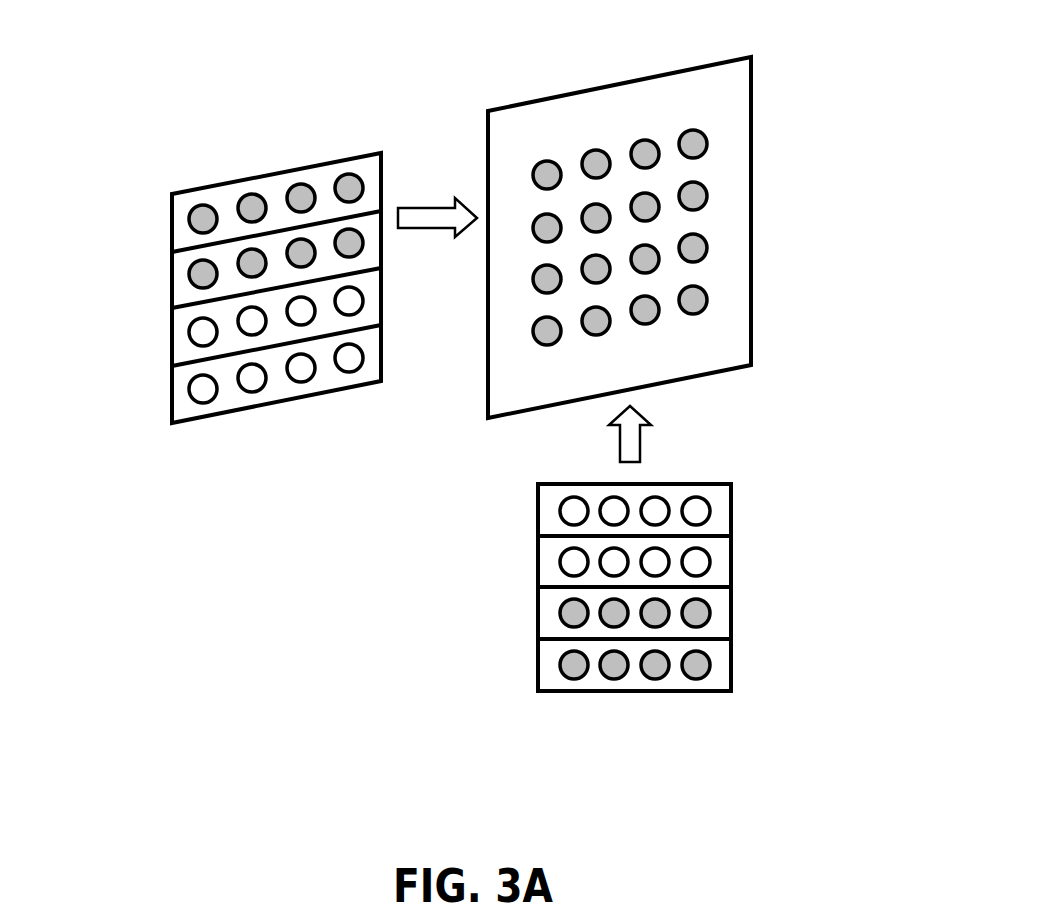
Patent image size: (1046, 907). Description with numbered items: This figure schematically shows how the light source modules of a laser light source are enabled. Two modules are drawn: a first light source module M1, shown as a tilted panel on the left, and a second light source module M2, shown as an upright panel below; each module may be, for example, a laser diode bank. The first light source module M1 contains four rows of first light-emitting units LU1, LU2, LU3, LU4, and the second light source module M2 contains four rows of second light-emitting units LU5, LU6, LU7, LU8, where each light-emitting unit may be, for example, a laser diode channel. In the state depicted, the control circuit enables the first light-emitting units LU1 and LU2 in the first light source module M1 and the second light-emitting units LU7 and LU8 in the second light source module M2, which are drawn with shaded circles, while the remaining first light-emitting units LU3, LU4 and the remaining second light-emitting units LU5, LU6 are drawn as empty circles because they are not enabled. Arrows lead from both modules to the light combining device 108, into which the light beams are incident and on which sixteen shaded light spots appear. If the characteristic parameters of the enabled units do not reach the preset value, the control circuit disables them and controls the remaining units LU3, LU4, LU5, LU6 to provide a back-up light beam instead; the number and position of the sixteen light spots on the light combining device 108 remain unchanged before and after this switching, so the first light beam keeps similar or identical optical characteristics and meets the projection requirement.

The first light source module M1 is at (244, 160).
The second light source module M2 is at (755, 583).
The light combining device 108 is at (752, 87).
The first light-emitting unit LU1 is at (172, 221).
The first light-emitting unit LU2 is at (172, 273).
The first light-emitting unit LU3 is at (172, 340).
The first light-emitting unit LU4 is at (172, 392).
The second light-emitting unit LU5 is at (538, 512).
The second light-emitting unit LU6 is at (538, 560).
The second light-emitting unit LU7 is at (538, 612).
The second light-emitting unit LU8 is at (538, 663).